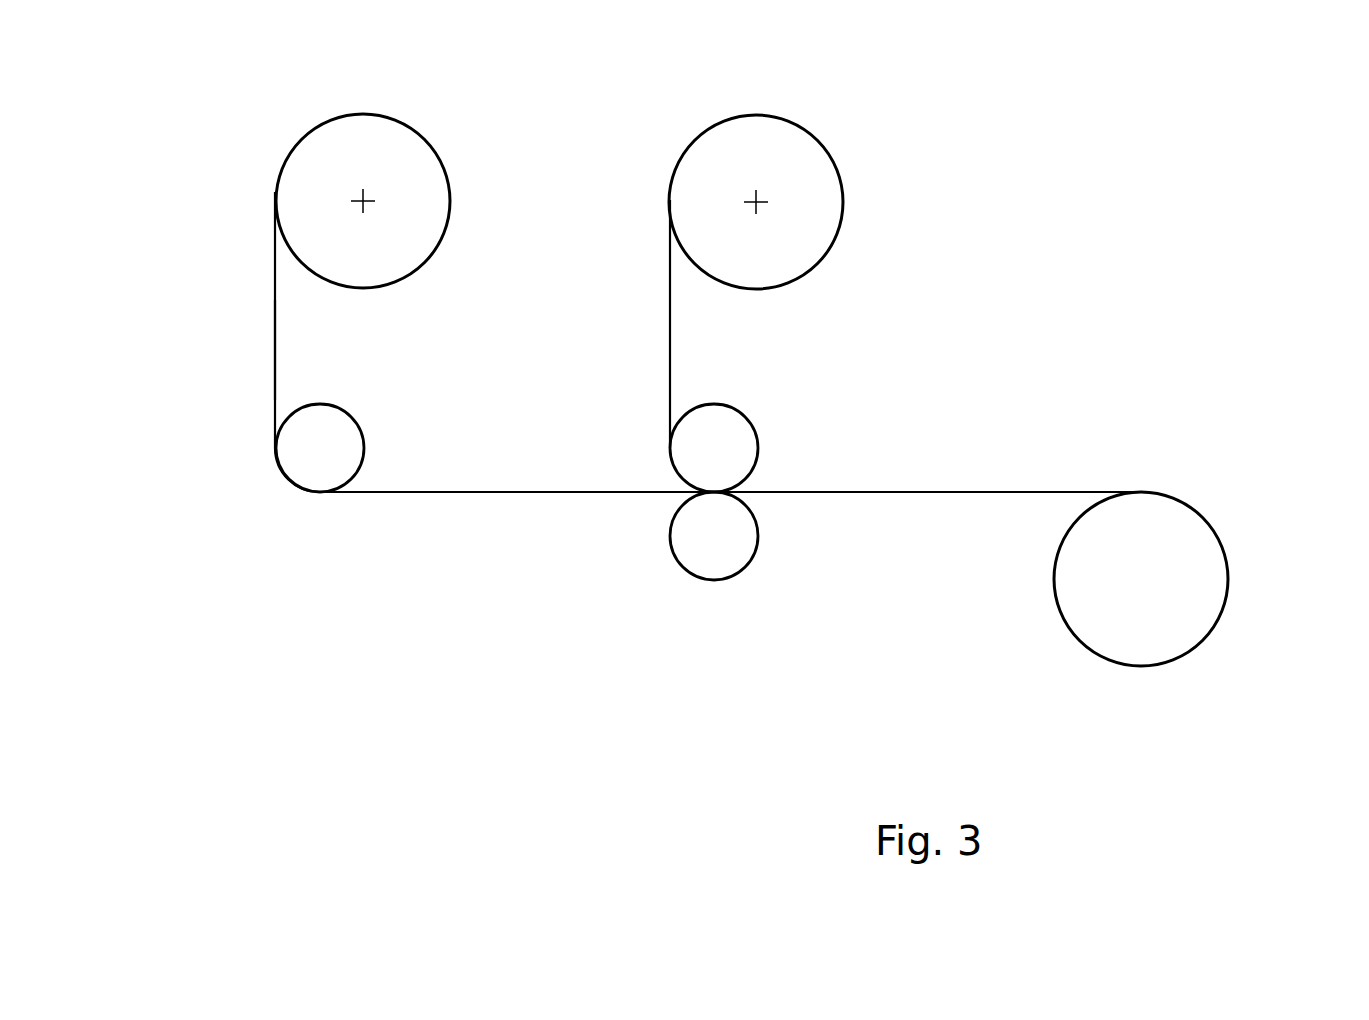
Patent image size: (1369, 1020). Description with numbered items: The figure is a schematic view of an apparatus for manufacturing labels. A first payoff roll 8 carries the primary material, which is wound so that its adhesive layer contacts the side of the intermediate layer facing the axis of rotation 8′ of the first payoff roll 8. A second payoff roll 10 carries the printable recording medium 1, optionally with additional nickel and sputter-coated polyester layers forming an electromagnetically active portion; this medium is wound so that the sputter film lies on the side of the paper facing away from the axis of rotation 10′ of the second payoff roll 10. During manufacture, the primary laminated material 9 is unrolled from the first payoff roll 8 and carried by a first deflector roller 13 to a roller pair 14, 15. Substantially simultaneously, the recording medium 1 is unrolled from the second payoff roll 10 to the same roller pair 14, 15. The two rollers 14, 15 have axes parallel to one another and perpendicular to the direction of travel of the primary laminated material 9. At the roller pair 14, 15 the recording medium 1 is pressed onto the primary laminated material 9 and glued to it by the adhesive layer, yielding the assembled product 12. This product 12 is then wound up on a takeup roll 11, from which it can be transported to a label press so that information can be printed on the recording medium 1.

The printable recording medium 1 is at (670, 338).
The first payoff roll 8 is at (427, 138).
The axis of rotation of the first payoff roll 8′ is at (360, 197).
The primary laminated material 9 is at (274, 332).
The second payoff roll 10 is at (828, 152).
The axis of rotation of the second payoff roll 10′ is at (762, 203).
The takeup roll 11 is at (1192, 548).
The assembled product 12 is at (952, 490).
The first deflector roller 13 is at (307, 454).
The roller of roller pair 14 is at (727, 442).
The roller of roller pair 15 is at (716, 537).